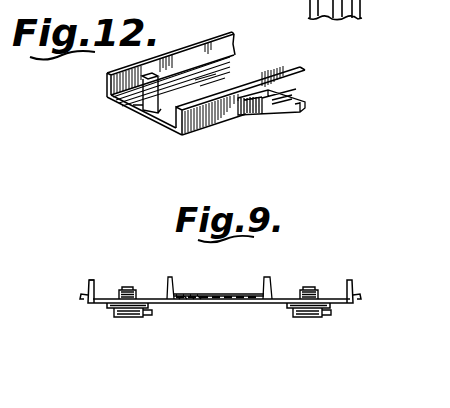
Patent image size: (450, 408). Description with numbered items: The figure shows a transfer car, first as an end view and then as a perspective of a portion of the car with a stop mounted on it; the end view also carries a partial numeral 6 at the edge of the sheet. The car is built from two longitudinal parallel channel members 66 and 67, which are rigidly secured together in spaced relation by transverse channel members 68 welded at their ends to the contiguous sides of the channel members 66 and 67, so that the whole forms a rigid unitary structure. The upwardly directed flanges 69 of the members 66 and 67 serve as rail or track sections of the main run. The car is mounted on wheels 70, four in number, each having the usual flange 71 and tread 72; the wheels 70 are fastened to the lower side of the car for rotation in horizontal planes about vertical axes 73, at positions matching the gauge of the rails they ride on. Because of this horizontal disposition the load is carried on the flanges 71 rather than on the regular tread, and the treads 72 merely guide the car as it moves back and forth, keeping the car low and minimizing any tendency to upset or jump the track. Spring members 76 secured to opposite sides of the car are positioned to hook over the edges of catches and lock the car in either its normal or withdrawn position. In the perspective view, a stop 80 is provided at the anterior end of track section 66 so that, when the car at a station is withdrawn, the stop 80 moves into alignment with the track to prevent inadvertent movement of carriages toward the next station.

In FIG. 12, the fragment of adjacent figure 6 is at (298, 10).
In FIG. 12, the longitudinal channel member 66 is at (198, 75).
In FIG. 9, the longitudinal channel member 66 is at (352, 282).
In FIG. 9, the longitudinal channel member 67 is at (90, 282).
In FIG. 12, the transverse channel member 68 is at (265, 118).
In FIG. 9, the upwardly directed flange 69 is at (264, 278).
In FIG. 9, the wheel 70 is at (300, 318).
In FIG. 9, the flange 71 is at (288, 308).
In FIG. 9, the tread 72 is at (329, 315).
In FIG. 9, the vertical axis 73 is at (128, 289).
In FIG. 9, the spring member 76 is at (361, 297).
In FIG. 12, the stop 80 is at (145, 79).